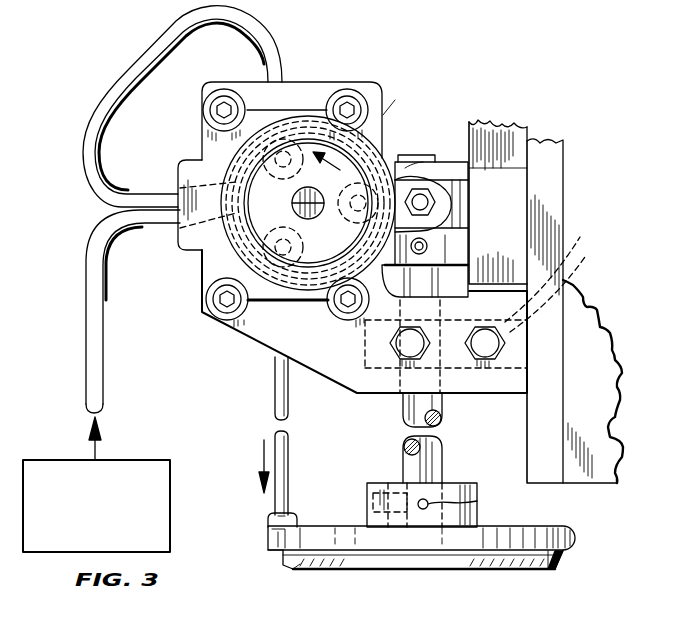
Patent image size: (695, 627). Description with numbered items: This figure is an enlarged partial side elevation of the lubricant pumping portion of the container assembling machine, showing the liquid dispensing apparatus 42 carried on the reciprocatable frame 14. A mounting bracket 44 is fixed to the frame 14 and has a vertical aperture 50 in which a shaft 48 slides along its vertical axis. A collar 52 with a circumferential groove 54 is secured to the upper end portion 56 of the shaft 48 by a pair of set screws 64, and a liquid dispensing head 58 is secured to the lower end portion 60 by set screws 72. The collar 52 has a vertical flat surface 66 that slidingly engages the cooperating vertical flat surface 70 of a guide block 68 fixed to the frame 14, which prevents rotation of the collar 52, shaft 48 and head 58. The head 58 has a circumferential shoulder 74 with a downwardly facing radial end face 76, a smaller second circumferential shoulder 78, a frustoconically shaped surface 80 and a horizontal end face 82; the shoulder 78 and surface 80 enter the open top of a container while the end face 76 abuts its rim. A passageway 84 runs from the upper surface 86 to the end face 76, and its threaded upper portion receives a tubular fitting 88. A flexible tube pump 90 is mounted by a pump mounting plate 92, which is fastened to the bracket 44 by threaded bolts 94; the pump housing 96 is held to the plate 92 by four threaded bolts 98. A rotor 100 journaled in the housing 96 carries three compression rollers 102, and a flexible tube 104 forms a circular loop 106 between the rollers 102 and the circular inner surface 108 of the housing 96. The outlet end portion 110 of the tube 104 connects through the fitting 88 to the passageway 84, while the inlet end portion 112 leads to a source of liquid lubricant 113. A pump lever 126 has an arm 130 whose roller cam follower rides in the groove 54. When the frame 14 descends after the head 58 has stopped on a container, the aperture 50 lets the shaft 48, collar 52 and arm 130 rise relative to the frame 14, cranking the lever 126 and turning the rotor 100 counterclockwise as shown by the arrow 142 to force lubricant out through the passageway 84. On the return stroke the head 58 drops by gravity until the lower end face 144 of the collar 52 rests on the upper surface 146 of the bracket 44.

The reciprocatable frame 14 is at (553, 167).
The liquid dispensing apparatus 42 is at (378, 82).
The mounting bracket 44 is at (560, 288).
The shaft 48 is at (405, 412).
The aperture 50 is at (437, 367).
The collar 52 is at (435, 162).
The circumferential groove 54 is at (450, 203).
The upper end portion 56 is at (402, 158).
The liquid dispensing head 58 is at (577, 525).
The lower end portion 60 is at (433, 475).
The set screws 64 is at (430, 243).
The vertical flat surface 66 is at (470, 172).
The guide block 68 is at (508, 130).
The cooperating vertical flat surface 70 is at (464, 121).
The set screws 72 is at (387, 482).
The circumferential shoulder 74 is at (575, 538).
The radial end face 76 is at (573, 552).
The second circumferential shoulder 78 is at (565, 558).
The frustoconically shaped surface 80 is at (540, 567).
The end face 82 is at (482, 569).
The passageway 84 is at (283, 550).
The upper surface 86 is at (323, 527).
The tubular fitting 88 is at (266, 521).
The flexible tube pump 90 is at (280, 110).
The pump mounting plate 92 is at (272, 332).
The threaded bolts 94 is at (447, 318).
The housing 96 is at (205, 163).
The threaded bolts 98 is at (226, 95).
The rotor 100 is at (293, 205).
The compression rollers 102 is at (307, 110).
The flexible tube 104 is at (97, 163).
The circular loop 106 is at (320, 203).
The circular inner surface 108 is at (213, 225).
The outlet end portion 110 is at (290, 508).
The inlet end portion 112 is at (87, 400).
The source of liquid lubricant 113 is at (138, 458).
The pump lever 126 is at (397, 177).
The arm 130 is at (405, 170).
The arrow 142 is at (380, 117).
The lower end face 144 is at (466, 274).
The upper surface 146 is at (561, 271).